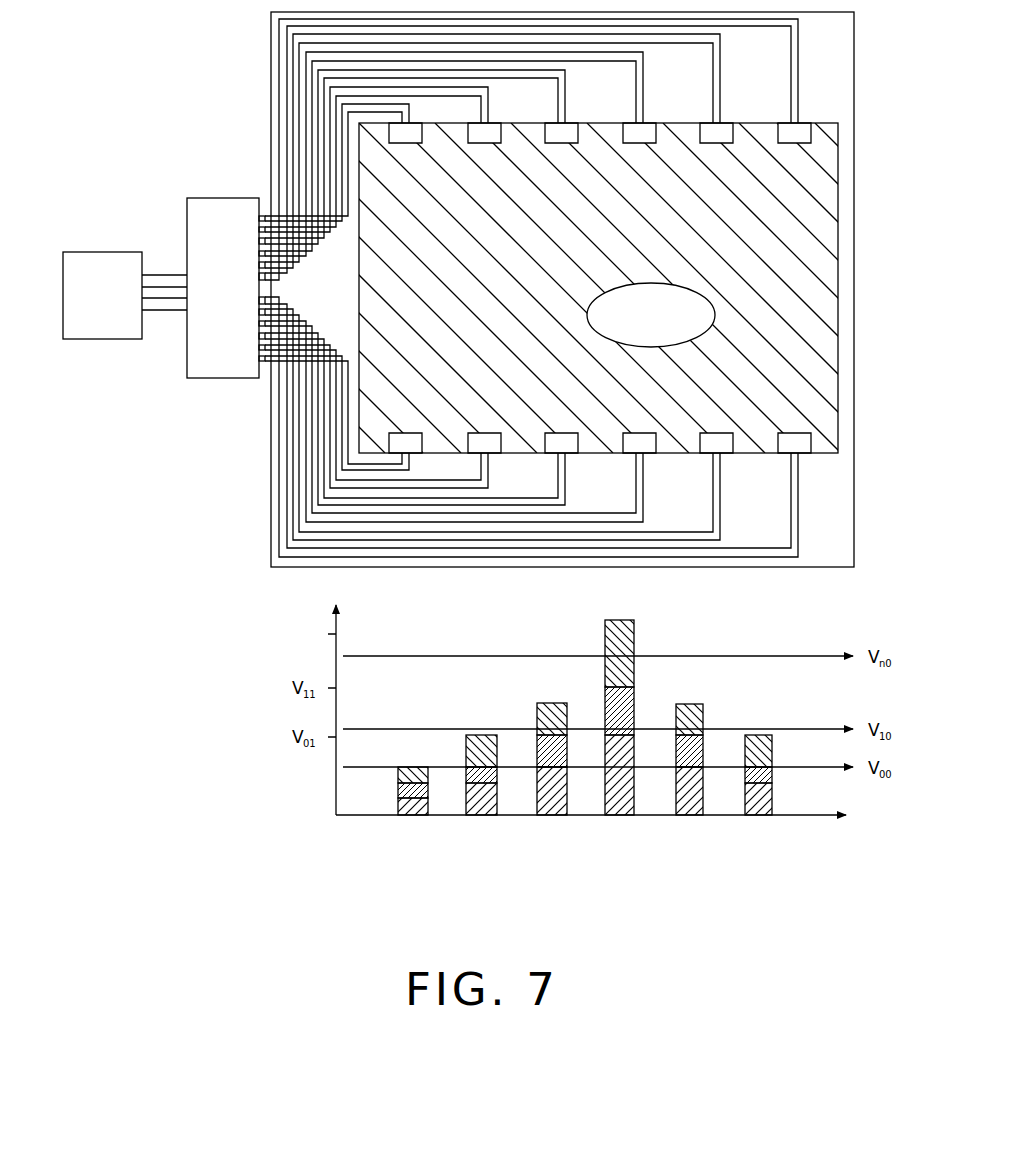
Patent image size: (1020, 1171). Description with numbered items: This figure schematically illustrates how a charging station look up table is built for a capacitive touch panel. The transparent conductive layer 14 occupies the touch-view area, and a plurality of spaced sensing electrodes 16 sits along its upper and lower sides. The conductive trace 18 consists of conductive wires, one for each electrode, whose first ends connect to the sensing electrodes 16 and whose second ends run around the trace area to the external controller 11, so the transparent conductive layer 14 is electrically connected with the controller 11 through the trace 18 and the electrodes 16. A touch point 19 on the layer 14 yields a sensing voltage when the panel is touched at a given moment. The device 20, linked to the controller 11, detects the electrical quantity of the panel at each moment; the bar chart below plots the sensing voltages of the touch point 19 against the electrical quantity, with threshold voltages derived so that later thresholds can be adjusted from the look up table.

The external controller 11 is at (197, 197).
The transparent conductive layer 14 is at (808, 270).
The sensing electrodes 16 is at (806, 126).
The conductive trace 18 is at (797, 65).
The touch point 19 is at (688, 317).
The device 20 is at (117, 264).